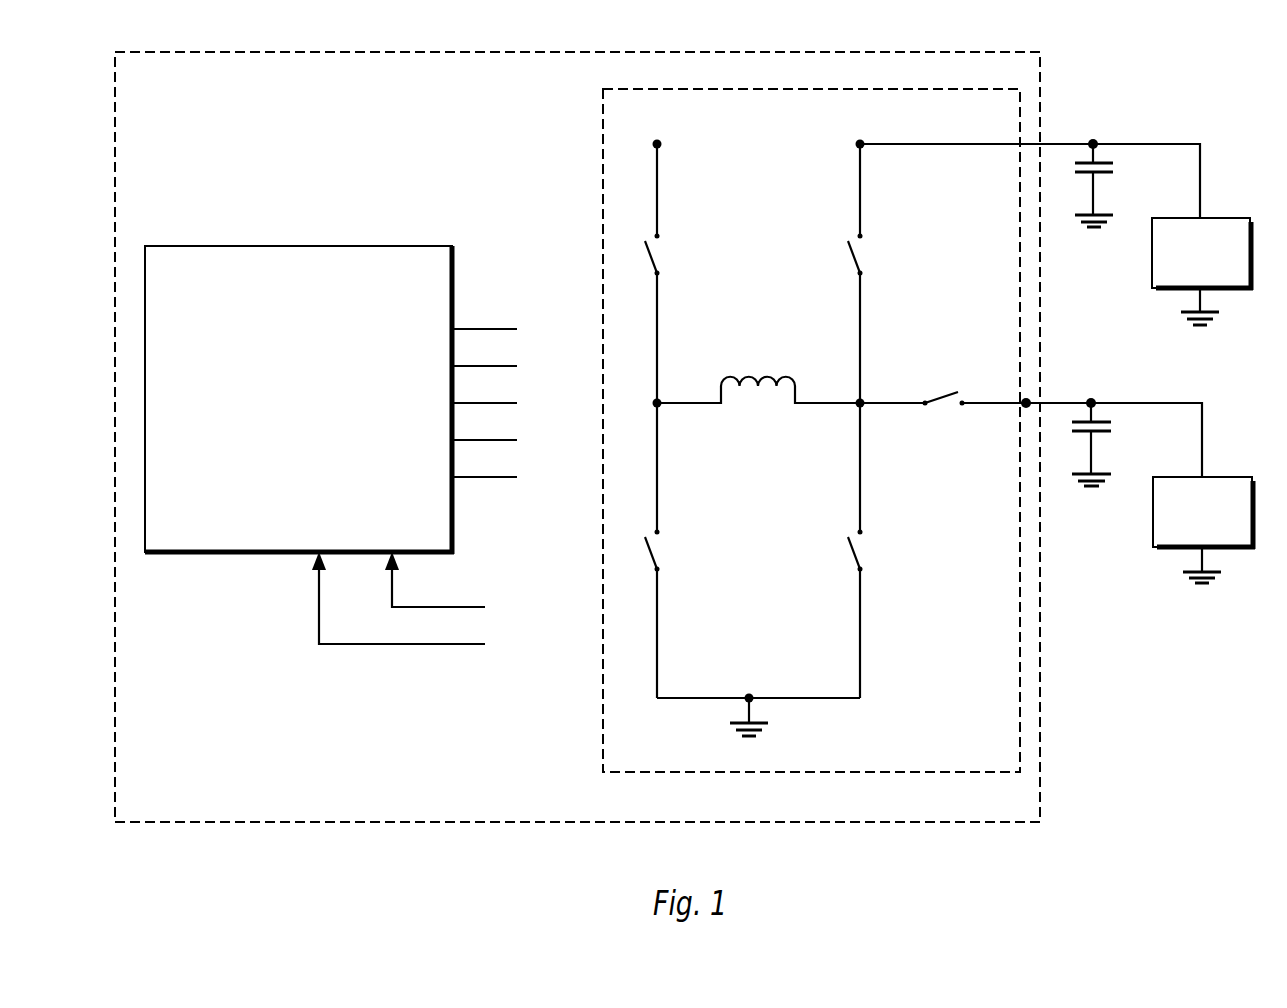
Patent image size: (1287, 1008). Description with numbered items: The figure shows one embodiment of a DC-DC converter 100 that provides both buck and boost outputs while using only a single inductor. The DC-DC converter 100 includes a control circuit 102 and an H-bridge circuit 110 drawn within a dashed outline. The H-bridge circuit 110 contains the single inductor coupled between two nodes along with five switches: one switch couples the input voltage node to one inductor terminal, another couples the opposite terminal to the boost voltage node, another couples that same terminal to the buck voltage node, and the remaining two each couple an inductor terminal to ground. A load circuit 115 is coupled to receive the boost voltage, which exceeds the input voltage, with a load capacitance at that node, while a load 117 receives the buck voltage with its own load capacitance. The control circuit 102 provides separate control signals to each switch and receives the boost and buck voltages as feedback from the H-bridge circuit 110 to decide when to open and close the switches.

The DC-DC converter 100 is at (596, 36).
The H-bridge circuit 110 is at (601, 126).
The control circuit 102 is at (317, 438).
The load circuit 115 is at (1237, 261).
The load 117 is at (1239, 521).